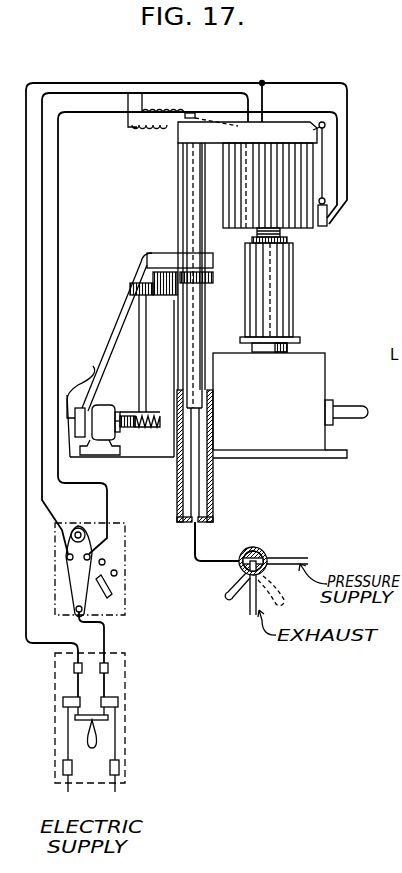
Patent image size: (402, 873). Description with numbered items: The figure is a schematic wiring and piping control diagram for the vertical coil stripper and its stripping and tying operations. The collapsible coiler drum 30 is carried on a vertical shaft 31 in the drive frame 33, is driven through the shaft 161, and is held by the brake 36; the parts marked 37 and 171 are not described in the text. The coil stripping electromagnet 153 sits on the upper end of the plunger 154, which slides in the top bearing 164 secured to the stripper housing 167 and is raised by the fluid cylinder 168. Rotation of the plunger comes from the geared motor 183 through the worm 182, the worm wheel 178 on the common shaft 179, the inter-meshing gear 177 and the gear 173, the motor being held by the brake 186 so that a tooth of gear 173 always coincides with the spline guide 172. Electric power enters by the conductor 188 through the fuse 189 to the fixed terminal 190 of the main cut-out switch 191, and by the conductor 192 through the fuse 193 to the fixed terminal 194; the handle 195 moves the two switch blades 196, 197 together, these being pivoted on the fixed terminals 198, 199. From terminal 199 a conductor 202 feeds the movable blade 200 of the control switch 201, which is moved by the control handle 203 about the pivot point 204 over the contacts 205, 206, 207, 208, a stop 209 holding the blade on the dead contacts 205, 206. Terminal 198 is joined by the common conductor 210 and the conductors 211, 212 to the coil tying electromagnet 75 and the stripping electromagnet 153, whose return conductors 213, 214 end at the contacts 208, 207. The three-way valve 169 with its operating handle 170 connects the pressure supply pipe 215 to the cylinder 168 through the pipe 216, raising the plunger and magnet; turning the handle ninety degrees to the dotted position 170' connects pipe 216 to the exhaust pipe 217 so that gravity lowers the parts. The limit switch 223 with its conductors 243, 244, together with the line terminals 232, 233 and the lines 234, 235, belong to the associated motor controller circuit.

The common conductor 210 is at (33, 80).
The conductor 211 is at (339, 124).
The conductor 212 is at (290, 68).
The return conductor 213 is at (237, 68).
The return conductor 214 is at (122, 113).
The conductor 243 is at (133, 96).
The conductor 244 is at (143, 108).
The limit switch 223 is at (186, 119).
The coil stripping electromagnet 153 is at (273, 136).
The plunger 154 is at (193, 192).
The lower end of cylinder 37 is at (304, 229).
The coil tying electromagnet 75 is at (334, 225).
The top bearing 164 is at (178, 252).
The inter-meshing gear 177 is at (145, 258).
The stripper housing 167 is at (131, 290).
The toothed member 171 is at (213, 284).
The gear 173 is at (175, 288).
The spline guide 172 is at (178, 330).
The common shaft 179 is at (140, 311).
The worm wheel 178 is at (162, 405).
The worm 182 is at (133, 428).
The geared motor 183 is at (102, 408).
The brake 186 is at (81, 387).
The fluid cylinder 168 is at (213, 486).
The pipe 216 is at (198, 538).
The three-way valve 169 is at (262, 550).
The pressure supply pipe 215 is at (304, 558).
The exhaust pipe 217 is at (250, 612).
The operating handle 170 is at (223, 598).
The dotted position of valve handle 170' is at (293, 600).
The collapsible coiler drum 30 is at (283, 285).
The brake 36 is at (300, 340).
The vertical shaft 31 is at (292, 350).
The drive frame 33 is at (311, 369).
The shaft 161 is at (378, 392).
The control switch 201 is at (126, 578).
The movable blade 200 is at (75, 580).
The control handle 203 is at (88, 530).
The contact 208 is at (68, 560).
The contact 207 is at (95, 548).
The dead contact 206 is at (106, 560).
The dead contact 205 is at (118, 572).
The stop 209 is at (113, 583).
The pivot point 204 is at (78, 616).
The conductor 202 is at (105, 630).
The fixed terminal 198 is at (73, 667).
The fixed terminal 199 is at (108, 665).
The switch blade 196 is at (76, 683).
The switch blade 197 is at (108, 682).
The fixed terminal 194 is at (65, 705).
The fixed terminal 190 is at (117, 698).
The main cut-out switch 191 is at (110, 718).
The handle 195 is at (96, 738).
The fuse 193 is at (66, 770).
The conductor 192 is at (66, 800).
The fuse 189 is at (120, 768).
The conductor 188 is at (117, 796).
The terminal 232 is at (390, 188).
The line terminal 233 is at (386, 215).
The line 234 is at (386, 237).
The line 235 is at (386, 257).